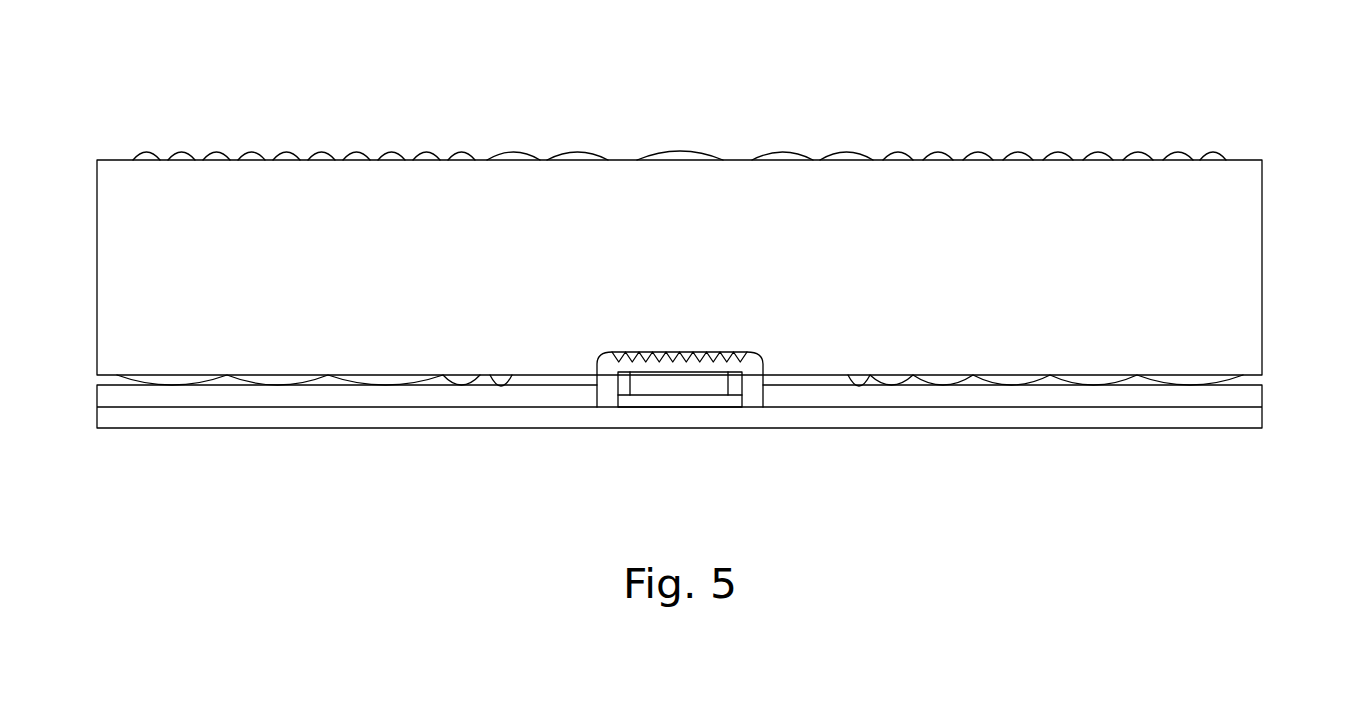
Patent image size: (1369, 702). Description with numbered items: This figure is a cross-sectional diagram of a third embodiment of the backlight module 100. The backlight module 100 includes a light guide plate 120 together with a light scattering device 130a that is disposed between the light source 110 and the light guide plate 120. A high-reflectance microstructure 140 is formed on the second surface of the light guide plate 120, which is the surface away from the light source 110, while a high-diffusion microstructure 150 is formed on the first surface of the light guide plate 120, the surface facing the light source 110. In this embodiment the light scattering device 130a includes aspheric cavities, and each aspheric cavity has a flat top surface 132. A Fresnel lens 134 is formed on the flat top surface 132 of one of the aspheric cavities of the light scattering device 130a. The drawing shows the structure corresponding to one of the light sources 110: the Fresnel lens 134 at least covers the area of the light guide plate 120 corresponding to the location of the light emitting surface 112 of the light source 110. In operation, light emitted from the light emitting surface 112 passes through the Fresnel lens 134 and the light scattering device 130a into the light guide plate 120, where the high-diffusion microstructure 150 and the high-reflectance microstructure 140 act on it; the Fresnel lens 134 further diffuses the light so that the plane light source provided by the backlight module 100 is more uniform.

The backlight module 100 is at (178, 95).
The light source 110 is at (682, 387).
The light emitting surface 112 is at (712, 373).
The light guide plate 120 is at (1248, 267).
The light scattering device 130a is at (759, 350).
The flat top surface 132 is at (678, 352).
The Fresnel lens 134 is at (662, 360).
The high-reflectance microstructure 140 is at (679, 158).
The high-diffusion microstructure 150 is at (353, 377).